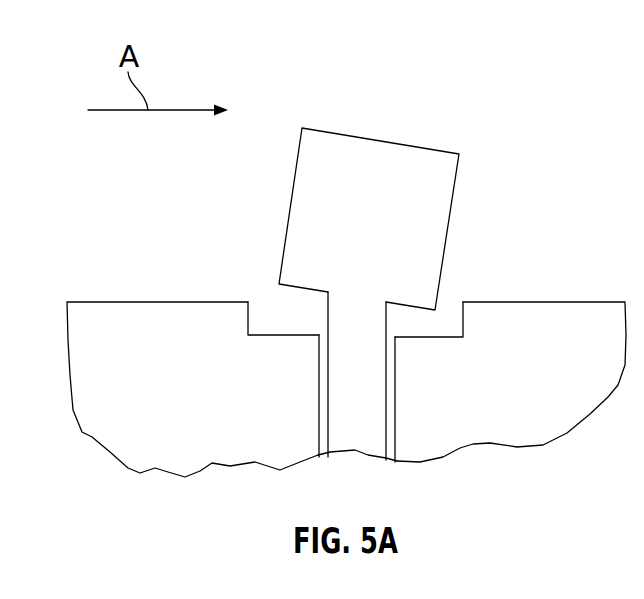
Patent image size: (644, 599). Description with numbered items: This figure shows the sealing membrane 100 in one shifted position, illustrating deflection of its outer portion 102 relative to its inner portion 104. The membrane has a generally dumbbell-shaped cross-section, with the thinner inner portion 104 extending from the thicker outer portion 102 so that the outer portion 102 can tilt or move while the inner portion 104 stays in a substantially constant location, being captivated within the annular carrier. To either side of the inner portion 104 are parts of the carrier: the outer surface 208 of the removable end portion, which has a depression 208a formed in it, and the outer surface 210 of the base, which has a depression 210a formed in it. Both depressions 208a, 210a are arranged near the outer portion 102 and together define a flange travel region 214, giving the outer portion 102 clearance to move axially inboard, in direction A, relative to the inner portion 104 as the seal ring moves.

The sealing membrane 100 is at (392, 296).
The outer portion 102 is at (352, 233).
The inner portion 104 is at (340, 423).
The outer surface 208 is at (193, 353).
The depression 208a is at (282, 337).
The outer surface 210 is at (510, 346).
The depression 210a is at (430, 338).
The flange travel region 214 is at (265, 298).